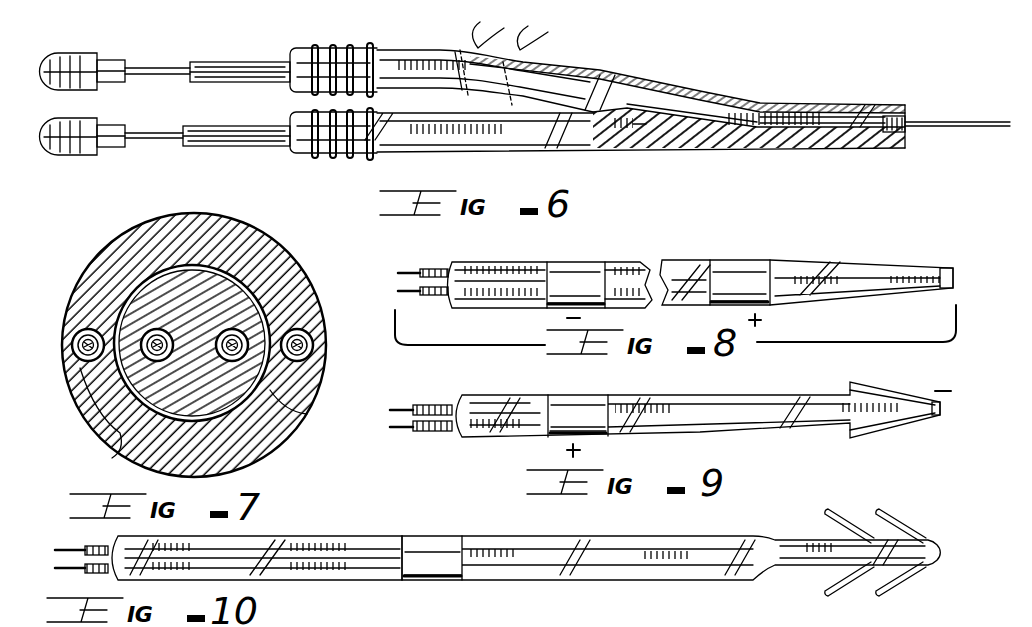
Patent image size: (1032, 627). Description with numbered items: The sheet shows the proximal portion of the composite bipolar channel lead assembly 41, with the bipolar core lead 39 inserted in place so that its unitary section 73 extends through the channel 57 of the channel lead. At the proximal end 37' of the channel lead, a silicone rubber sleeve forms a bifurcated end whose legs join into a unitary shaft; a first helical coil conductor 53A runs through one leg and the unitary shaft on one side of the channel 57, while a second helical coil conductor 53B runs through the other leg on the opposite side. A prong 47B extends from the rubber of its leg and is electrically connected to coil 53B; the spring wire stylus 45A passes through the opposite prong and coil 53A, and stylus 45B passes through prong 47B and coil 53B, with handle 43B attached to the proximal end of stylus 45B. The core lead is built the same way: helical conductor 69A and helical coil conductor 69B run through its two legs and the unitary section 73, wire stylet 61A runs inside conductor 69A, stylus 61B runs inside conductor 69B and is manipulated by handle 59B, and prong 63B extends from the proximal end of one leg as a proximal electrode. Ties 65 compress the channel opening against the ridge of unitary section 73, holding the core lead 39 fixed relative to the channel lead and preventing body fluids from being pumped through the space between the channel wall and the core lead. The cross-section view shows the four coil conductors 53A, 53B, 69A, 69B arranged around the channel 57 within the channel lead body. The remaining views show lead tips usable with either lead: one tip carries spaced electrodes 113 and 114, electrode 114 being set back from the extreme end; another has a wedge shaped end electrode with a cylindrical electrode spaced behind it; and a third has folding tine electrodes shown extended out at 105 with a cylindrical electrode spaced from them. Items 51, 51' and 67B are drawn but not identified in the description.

In FIG. 7, the proximal end of bipolar channel lead 37' is at (220, 345).
In FIG. 6, the bipolar core lead 39 is at (455, 48).
In FIG. 6, the bipolar channel lead assembly 41 is at (608, 70).
In FIG. 6, the handle 43B is at (77, 158).
In FIG. 7, the spring wire stylus 45A is at (314, 334).
In FIG. 6, the stylus 45B is at (148, 140).
In FIG. 7, the stylus 45B is at (78, 333).
In FIG. 6, the prong 47B is at (216, 147).
In FIG. 6, the rings 51 is at (321, 92).
In FIG. 6, the end ring 51' is at (384, 111).
In FIG. 7, the first helical coil conductor 53A is at (322, 352).
In FIG. 6, the second helical coil conductor 53B is at (452, 140).
In FIG. 7, the second helical coil conductor 53B is at (83, 363).
In FIG. 6, the channel 57 is at (575, 70).
In FIG. 7, the channel 57 is at (240, 420).
In FIG. 6, the handle 59B is at (80, 56).
In FIG. 7, the wire stylet 61A is at (222, 355).
In FIG. 6, the stylus 61B is at (155, 67).
In FIG. 7, the stylus 61B is at (158, 330).
In FIG. 6, the prong 63B is at (238, 61).
In FIG. 6, the ties 65 is at (530, 48).
In FIG. 6, the tube 67B is at (385, 50).
In FIG. 7, the helical conductor 69A is at (307, 414).
In FIG. 6, the helical coil conductor 69B is at (926, 133).
In FIG. 7, the helical coil conductor 69B is at (112, 458).
In FIG. 6, the unitary section 73 is at (878, 108).
In FIG. 7, the unitary section 73 is at (254, 284).
In FIG. 10, the extended tine position 105 is at (385, 626).
In FIG. 8, the electrode 113 is at (577, 262).
In FIG. 8, the electrode 114 is at (724, 260).